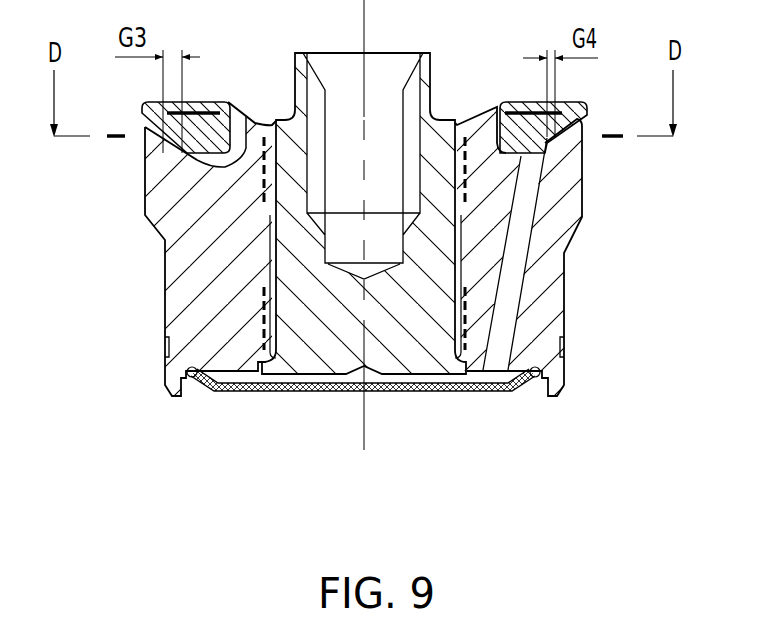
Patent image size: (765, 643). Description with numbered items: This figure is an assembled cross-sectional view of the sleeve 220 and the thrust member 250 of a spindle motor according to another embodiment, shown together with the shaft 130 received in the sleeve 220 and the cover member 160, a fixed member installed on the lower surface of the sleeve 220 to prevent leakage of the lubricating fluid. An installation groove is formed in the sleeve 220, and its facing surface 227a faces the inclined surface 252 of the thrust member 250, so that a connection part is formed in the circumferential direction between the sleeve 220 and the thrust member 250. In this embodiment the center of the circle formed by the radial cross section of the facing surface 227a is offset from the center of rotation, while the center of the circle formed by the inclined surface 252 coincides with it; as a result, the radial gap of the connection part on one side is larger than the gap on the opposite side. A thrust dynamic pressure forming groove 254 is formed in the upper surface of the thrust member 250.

The shaft 130 is at (315, 322).
The cover member 160 is at (403, 388).
The sleeve 220 is at (227, 322).
The facing surface 227a is at (147, 170).
The thrust member 250 is at (195, 105).
The inclined surface 252 is at (246, 110).
The thrust dynamic pressure forming groove 254 is at (532, 110).